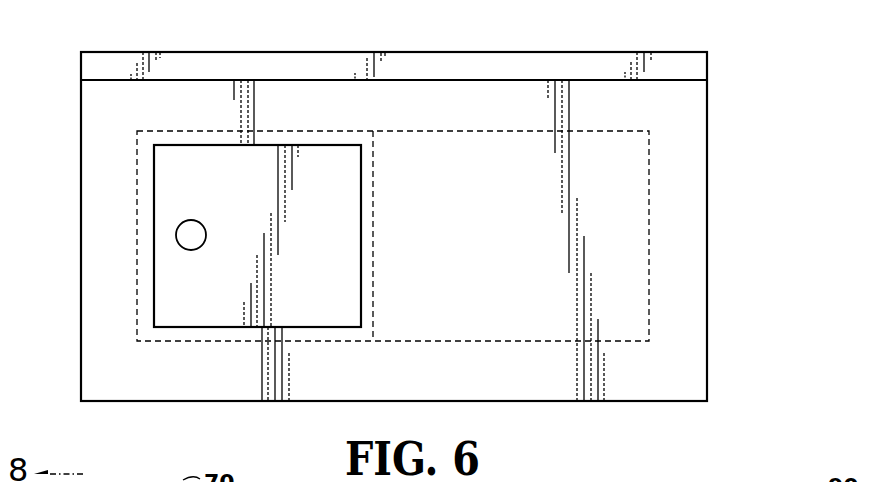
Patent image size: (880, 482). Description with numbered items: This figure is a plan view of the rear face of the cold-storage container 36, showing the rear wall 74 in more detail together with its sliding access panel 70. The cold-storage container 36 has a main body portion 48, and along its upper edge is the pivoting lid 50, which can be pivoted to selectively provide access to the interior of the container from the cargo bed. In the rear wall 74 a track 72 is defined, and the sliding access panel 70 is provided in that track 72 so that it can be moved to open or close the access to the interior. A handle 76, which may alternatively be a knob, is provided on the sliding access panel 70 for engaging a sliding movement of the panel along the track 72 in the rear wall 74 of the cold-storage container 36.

The cold-storage container 36 is at (730, 51).
The pivoting lid 50 is at (707, 70).
The main body portion 48 is at (707, 226).
The track 72 is at (513, 131).
The sliding access panel 70 is at (176, 292).
The handle 76 is at (194, 220).
The rear wall 74 is at (342, 382).